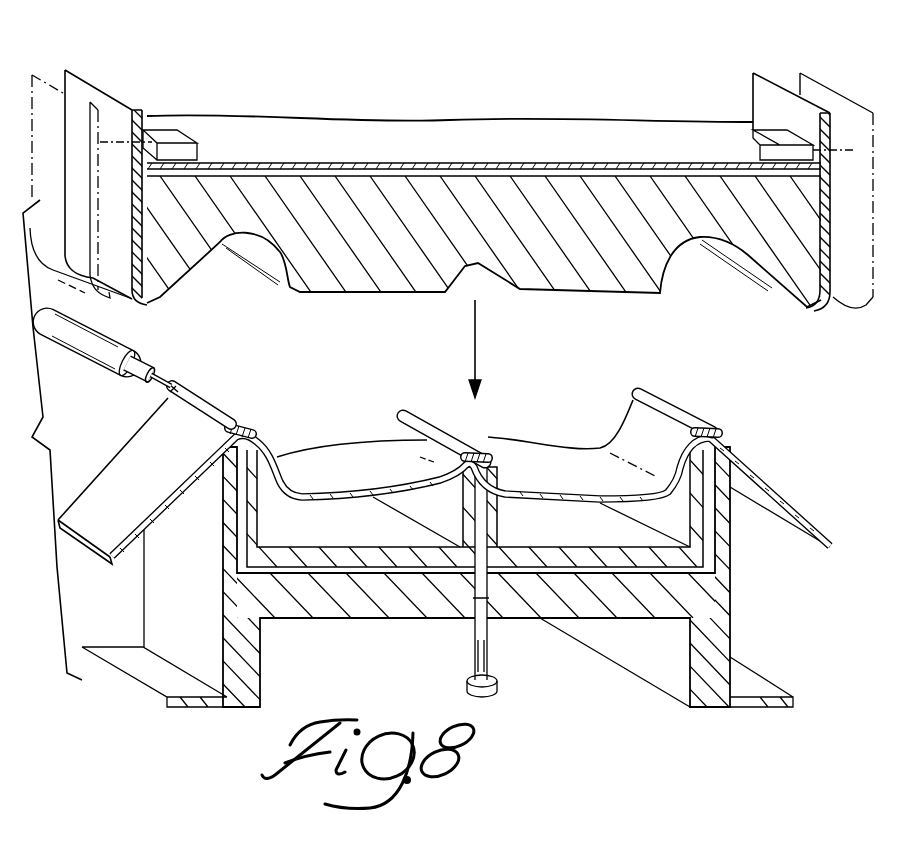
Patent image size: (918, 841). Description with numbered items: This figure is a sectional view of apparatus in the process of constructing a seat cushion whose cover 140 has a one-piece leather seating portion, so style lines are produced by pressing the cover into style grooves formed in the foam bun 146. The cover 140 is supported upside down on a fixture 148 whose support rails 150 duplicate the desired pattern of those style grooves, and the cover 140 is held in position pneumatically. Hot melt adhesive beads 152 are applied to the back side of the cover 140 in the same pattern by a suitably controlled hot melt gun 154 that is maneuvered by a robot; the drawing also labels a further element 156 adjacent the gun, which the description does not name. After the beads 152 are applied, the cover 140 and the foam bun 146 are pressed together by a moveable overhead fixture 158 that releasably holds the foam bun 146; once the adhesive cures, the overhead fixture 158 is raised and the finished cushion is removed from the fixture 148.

The cover 140 is at (760, 463).
The foam bun 146 is at (370, 272).
The fixture 148 is at (732, 641).
The support rails 150 is at (225, 556).
The hot melt adhesive beads 152 is at (240, 420).
The hot melt gun 154 is at (168, 374).
The tool handle 156 is at (83, 345).
The overhead fixture 158 is at (498, 145).